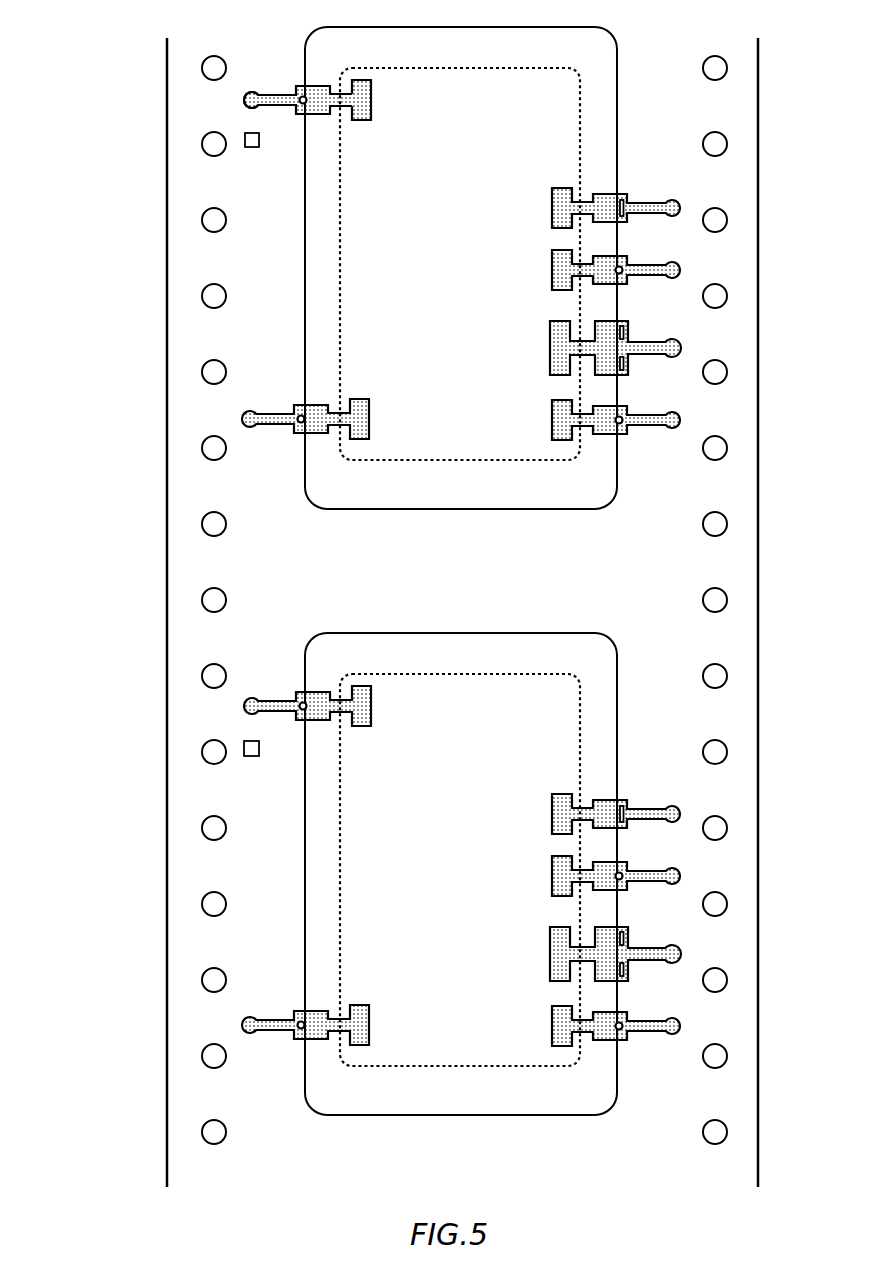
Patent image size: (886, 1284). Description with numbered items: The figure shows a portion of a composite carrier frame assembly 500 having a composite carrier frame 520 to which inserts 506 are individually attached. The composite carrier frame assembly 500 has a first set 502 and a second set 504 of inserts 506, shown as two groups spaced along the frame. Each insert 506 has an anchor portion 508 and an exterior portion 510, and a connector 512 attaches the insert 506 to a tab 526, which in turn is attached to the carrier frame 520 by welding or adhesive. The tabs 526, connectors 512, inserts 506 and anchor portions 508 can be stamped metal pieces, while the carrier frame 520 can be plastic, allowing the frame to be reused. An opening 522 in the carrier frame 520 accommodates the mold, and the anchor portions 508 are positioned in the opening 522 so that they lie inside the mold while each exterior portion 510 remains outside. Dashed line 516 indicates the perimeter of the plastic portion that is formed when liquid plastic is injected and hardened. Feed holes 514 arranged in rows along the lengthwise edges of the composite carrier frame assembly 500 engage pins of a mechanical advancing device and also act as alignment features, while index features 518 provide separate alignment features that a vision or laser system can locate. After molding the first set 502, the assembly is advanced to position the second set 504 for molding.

The composite carrier frame assembly 500 is at (116, 94).
The first set of inserts 502 is at (225, 253).
The second set of inserts 504 is at (231, 862).
The insert 506 is at (331, 121).
The anchor portion 508 is at (372, 99).
The exterior portion 510 is at (306, 92).
The connector 512 is at (294, 92).
The feed hole 514 is at (718, 218).
The dashed line 516 is at (483, 460).
The index feature 518 is at (245, 148).
The carrier frame 520 is at (738, 56).
The opening 522 is at (582, 510).
The tab 526 is at (243, 100).